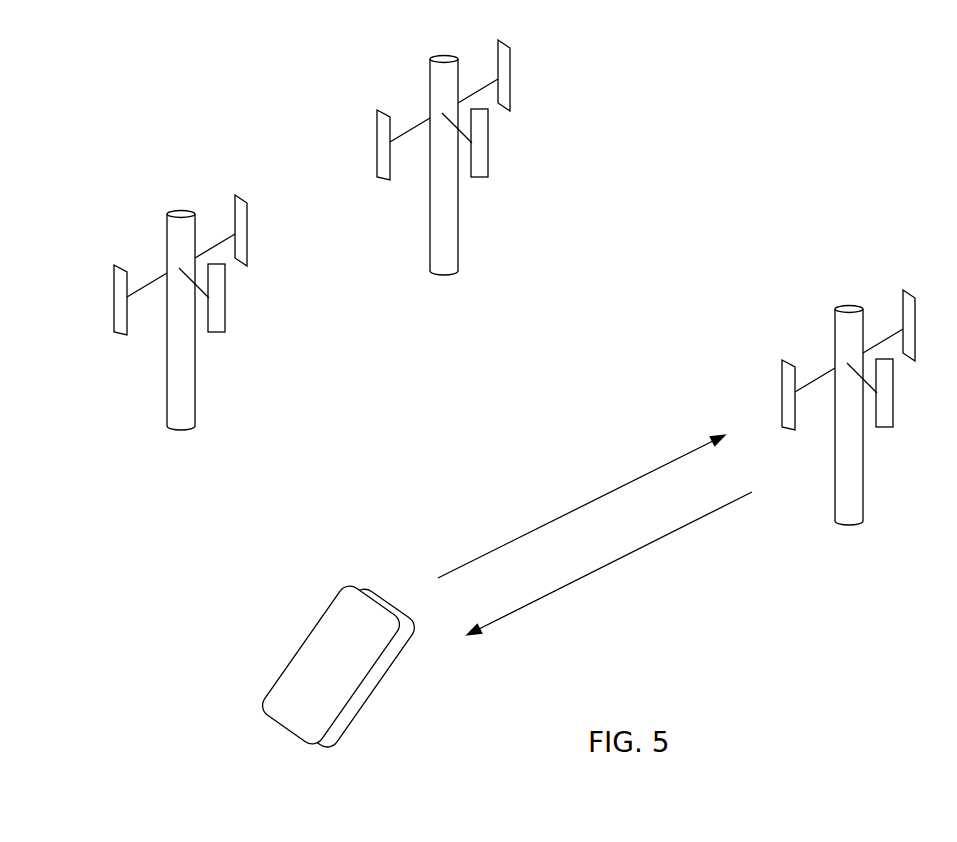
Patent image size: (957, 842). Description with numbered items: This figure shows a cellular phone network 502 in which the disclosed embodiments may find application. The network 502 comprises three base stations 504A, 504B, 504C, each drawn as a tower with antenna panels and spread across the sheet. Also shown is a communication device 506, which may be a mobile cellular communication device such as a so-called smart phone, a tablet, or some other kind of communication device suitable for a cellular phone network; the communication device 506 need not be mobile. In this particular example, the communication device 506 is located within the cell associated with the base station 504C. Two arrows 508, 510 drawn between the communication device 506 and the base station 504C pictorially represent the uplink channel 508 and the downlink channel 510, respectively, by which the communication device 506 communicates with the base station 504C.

The cellular phone network 502 is at (888, 102).
The base station 504A is at (179, 210).
The base station 504B is at (442, 55).
The base station 504C is at (847, 305).
The communication device 506 is at (326, 604).
The uplink channel 508 is at (573, 508).
The downlink channel 510 is at (590, 573).